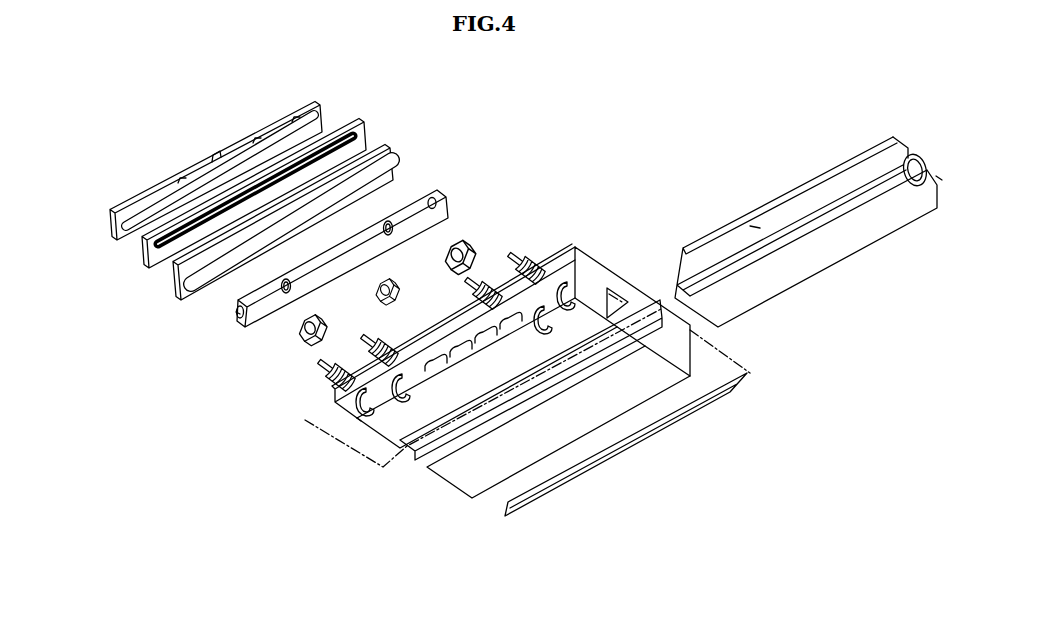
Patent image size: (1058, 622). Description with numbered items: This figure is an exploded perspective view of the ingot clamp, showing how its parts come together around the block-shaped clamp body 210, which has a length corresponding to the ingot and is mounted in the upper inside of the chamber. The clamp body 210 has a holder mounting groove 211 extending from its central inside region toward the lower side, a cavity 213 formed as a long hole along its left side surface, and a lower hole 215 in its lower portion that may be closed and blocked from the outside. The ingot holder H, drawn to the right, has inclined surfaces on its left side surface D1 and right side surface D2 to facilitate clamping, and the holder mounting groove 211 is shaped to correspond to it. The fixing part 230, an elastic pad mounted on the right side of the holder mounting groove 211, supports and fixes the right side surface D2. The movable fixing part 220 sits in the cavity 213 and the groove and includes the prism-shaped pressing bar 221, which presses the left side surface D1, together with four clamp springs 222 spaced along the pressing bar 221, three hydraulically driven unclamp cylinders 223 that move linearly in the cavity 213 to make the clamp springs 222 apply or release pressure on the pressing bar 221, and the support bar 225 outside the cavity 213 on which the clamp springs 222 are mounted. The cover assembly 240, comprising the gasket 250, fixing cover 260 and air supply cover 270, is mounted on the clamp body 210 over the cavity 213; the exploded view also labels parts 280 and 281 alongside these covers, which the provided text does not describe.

The clamp body 210 is at (592, 270).
The holder mounting groove 211 is at (630, 287).
The cavity 213 is at (362, 417).
The lower hole 215 is at (558, 298).
The movable fixing part 220 is at (182, 363).
The pressing bar 221 is at (333, 425).
The clamp spring 222 is at (323, 380).
The unclamp cylinder 223 is at (303, 338).
The support bar 225 is at (245, 322).
The fixing part 230 is at (697, 410).
The cover assembly 240 is at (131, 366).
The gasket 250 is at (178, 312).
The fixing cover 260 is at (177, 270).
The air supply cover 270 is at (147, 247).
The top plate 280 is at (118, 219).
The tab 281 is at (213, 157).
The ingot holder H is at (803, 262).
The left side surface D1 is at (755, 227).
The right side surface D2 is at (940, 178).